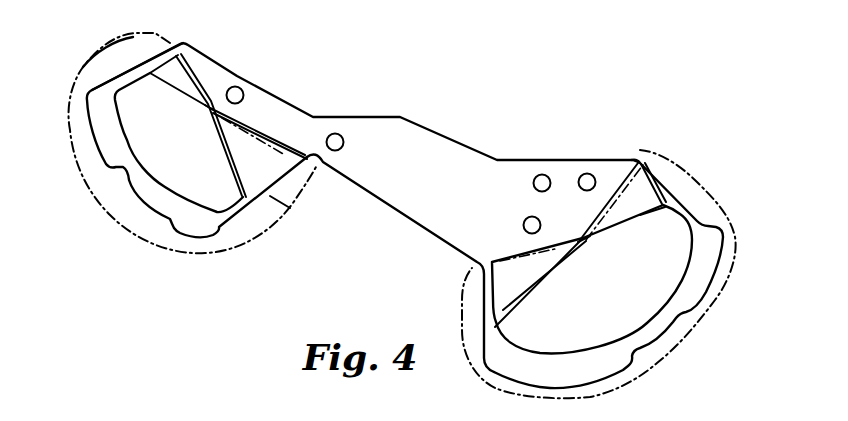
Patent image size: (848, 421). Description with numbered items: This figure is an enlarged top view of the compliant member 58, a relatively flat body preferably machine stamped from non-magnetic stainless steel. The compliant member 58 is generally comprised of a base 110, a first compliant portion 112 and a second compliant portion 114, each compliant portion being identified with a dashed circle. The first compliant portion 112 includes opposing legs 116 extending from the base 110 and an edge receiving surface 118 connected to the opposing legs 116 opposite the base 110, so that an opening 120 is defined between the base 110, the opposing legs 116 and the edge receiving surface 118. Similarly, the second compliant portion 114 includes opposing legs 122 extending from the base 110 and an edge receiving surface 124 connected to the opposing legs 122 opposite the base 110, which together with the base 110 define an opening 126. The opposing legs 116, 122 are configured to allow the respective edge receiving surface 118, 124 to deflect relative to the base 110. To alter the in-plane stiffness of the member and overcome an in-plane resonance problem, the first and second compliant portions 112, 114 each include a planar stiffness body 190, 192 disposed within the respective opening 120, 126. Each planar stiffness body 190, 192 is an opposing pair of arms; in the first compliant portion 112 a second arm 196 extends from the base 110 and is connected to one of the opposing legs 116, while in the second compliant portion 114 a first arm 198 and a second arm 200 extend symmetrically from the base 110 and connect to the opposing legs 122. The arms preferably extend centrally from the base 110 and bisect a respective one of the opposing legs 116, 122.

The compliant member 58 is at (666, 108).
The base 110 is at (435, 142).
The first compliant portion 112 is at (87, 62).
The second compliant portion 114 is at (690, 174).
The opposing legs 116 is at (130, 78).
The edge receiving surface 118 is at (100, 128).
The opening 120 is at (140, 146).
The opposing legs 122 is at (667, 193).
The edge receiving surface 124 is at (687, 297).
The opening 126 is at (645, 318).
The planar stiffness body 190 is at (202, 110).
The planar stiffness body 192 is at (588, 248).
The second arm 196 is at (283, 207).
The first arm 198 is at (508, 305).
The second arm 200 is at (652, 222).